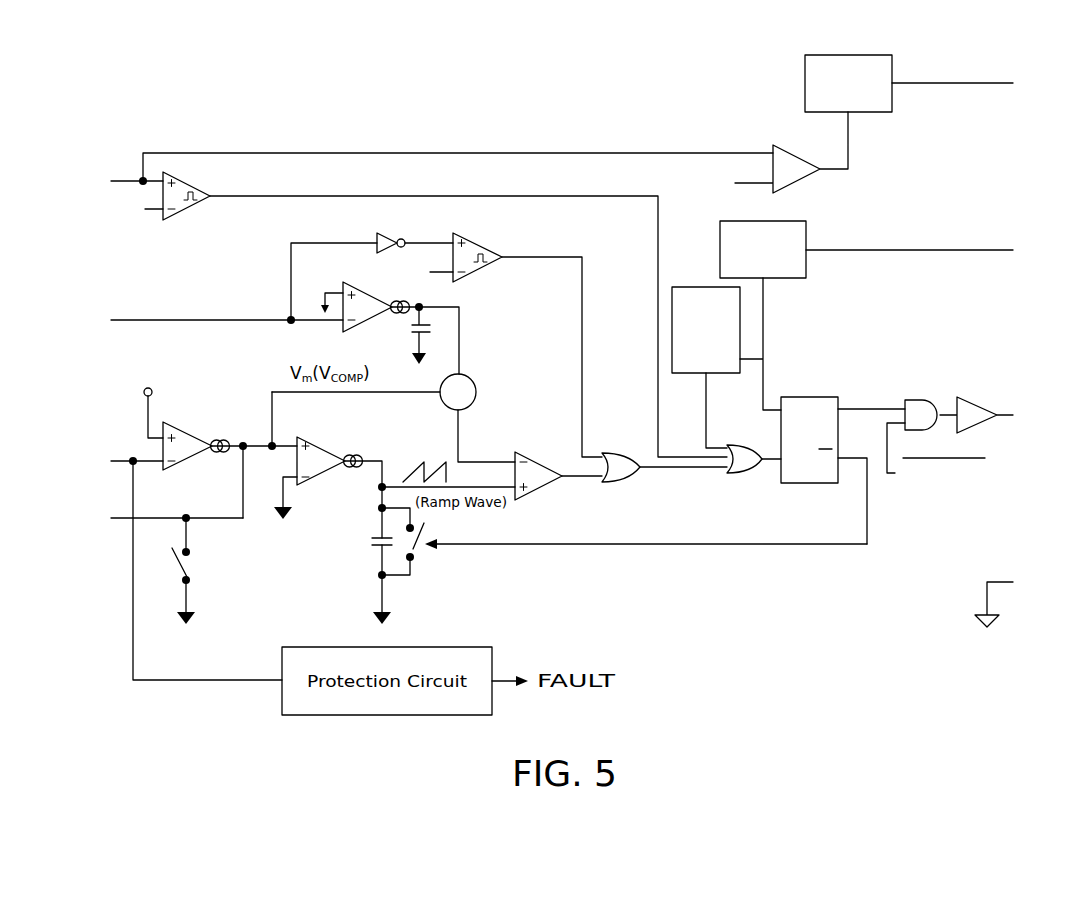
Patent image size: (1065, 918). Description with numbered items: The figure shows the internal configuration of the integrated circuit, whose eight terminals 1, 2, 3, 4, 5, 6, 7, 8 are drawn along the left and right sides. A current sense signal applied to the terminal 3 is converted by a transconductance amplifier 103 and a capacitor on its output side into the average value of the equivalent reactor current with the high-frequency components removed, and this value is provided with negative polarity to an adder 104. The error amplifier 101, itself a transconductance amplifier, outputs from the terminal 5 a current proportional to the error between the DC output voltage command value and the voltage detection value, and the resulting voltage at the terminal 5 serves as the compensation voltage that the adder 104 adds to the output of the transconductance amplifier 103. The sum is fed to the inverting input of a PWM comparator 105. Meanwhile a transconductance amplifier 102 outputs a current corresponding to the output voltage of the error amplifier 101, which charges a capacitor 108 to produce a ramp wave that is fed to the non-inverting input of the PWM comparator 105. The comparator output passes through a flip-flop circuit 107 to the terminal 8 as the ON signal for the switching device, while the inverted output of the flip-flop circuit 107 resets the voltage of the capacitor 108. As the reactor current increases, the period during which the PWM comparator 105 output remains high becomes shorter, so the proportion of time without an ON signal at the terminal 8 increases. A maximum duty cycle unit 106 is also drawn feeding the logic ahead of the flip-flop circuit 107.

The terminal 1 is at (1016, 598).
The terminal 2 is at (890, 253).
The terminal 3 is at (227, 301).
The terminal 4 is at (411, 186).
The terminal 5 is at (155, 565).
The terminal 6 is at (180, 551).
The terminal 7 is at (887, 124).
The terminal 8 is at (972, 441).
The error amplifier 101 is at (196, 452).
The transconductance amplifier 102 is at (330, 466).
The transconductance amplifier 103 is at (370, 310).
The adder 104 is at (477, 392).
The PWM comparator 105 is at (543, 480).
The maximum duty cycle unit 106 is at (684, 375).
The flip-flop circuit 107 is at (807, 395).
The capacitor 108 is at (369, 546).